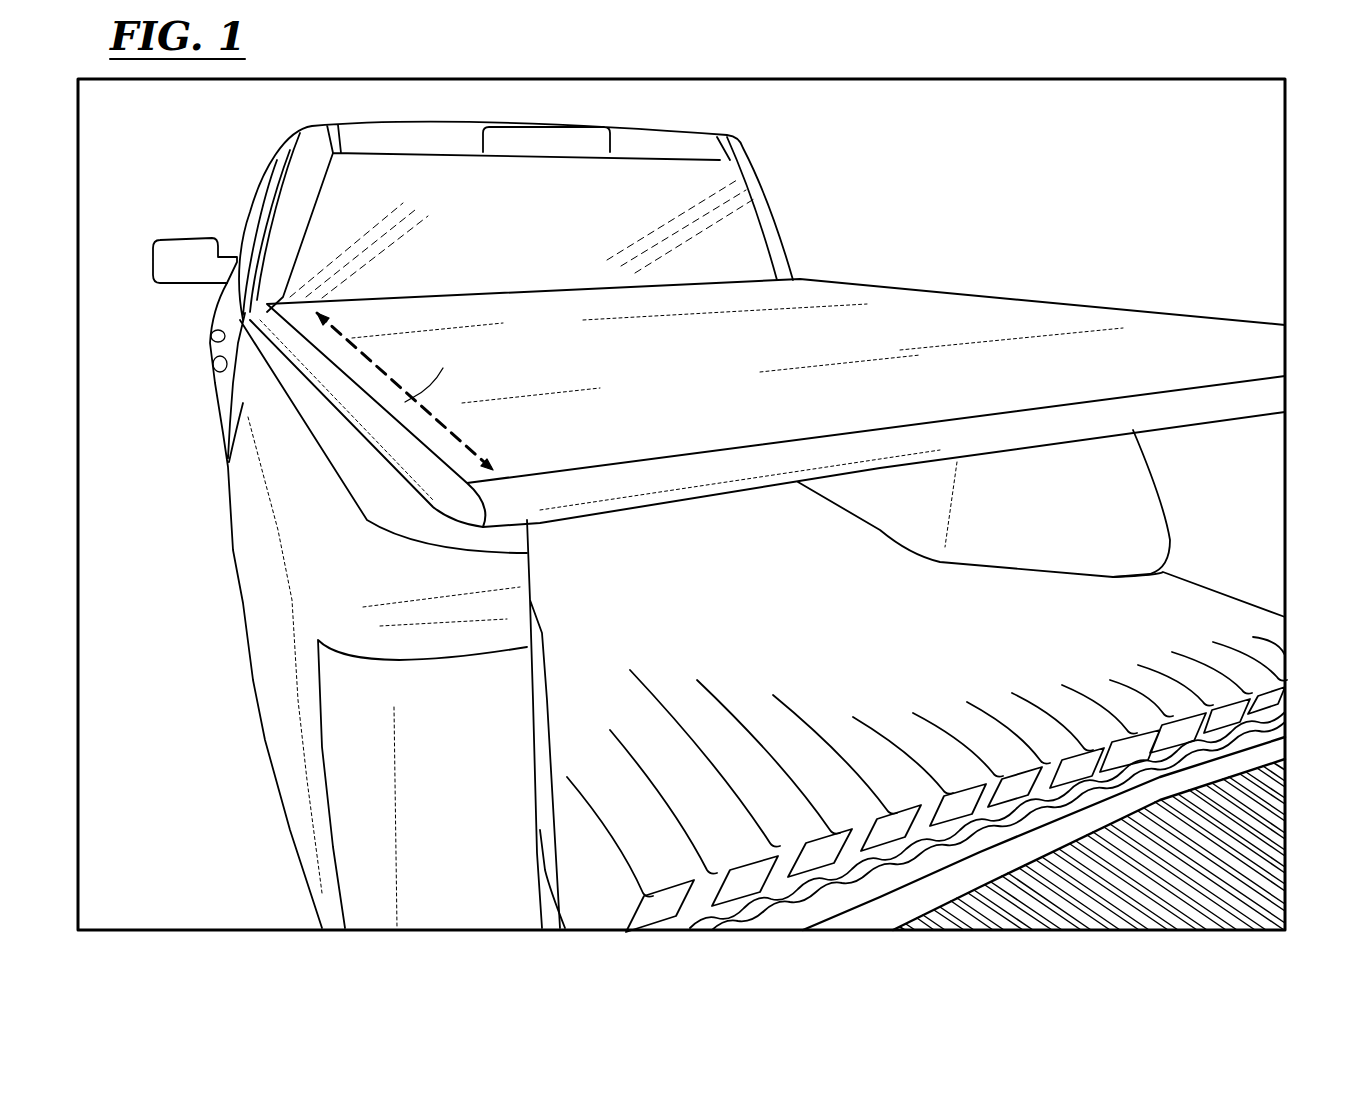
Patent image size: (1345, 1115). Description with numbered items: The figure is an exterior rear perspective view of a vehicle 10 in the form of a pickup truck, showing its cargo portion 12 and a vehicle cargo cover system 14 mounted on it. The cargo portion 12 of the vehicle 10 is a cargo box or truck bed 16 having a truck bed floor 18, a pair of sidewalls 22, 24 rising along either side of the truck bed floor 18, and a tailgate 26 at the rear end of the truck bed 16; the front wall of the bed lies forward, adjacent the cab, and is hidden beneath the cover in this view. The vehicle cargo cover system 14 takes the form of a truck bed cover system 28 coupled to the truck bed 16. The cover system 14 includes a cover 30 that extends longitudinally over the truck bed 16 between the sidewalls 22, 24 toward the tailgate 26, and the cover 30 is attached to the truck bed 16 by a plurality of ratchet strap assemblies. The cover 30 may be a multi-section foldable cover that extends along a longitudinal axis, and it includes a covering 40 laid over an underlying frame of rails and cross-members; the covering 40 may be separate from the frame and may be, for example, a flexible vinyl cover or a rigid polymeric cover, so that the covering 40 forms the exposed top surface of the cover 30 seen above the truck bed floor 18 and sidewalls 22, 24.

The vehicle 10 is at (965, 161).
The cargo portion 12 is at (923, 270).
The vehicle cargo cover system 14 is at (980, 286).
The truck bed 16 is at (612, 664).
The truck bed floor 18 is at (814, 606).
The sidewall 22 is at (529, 638).
The sidewall 24 is at (1245, 521).
The tailgate 26 is at (1270, 830).
The truck bed cover system 28 is at (1045, 293).
The cover 30 is at (1124, 308).
The covering 40 is at (832, 381).